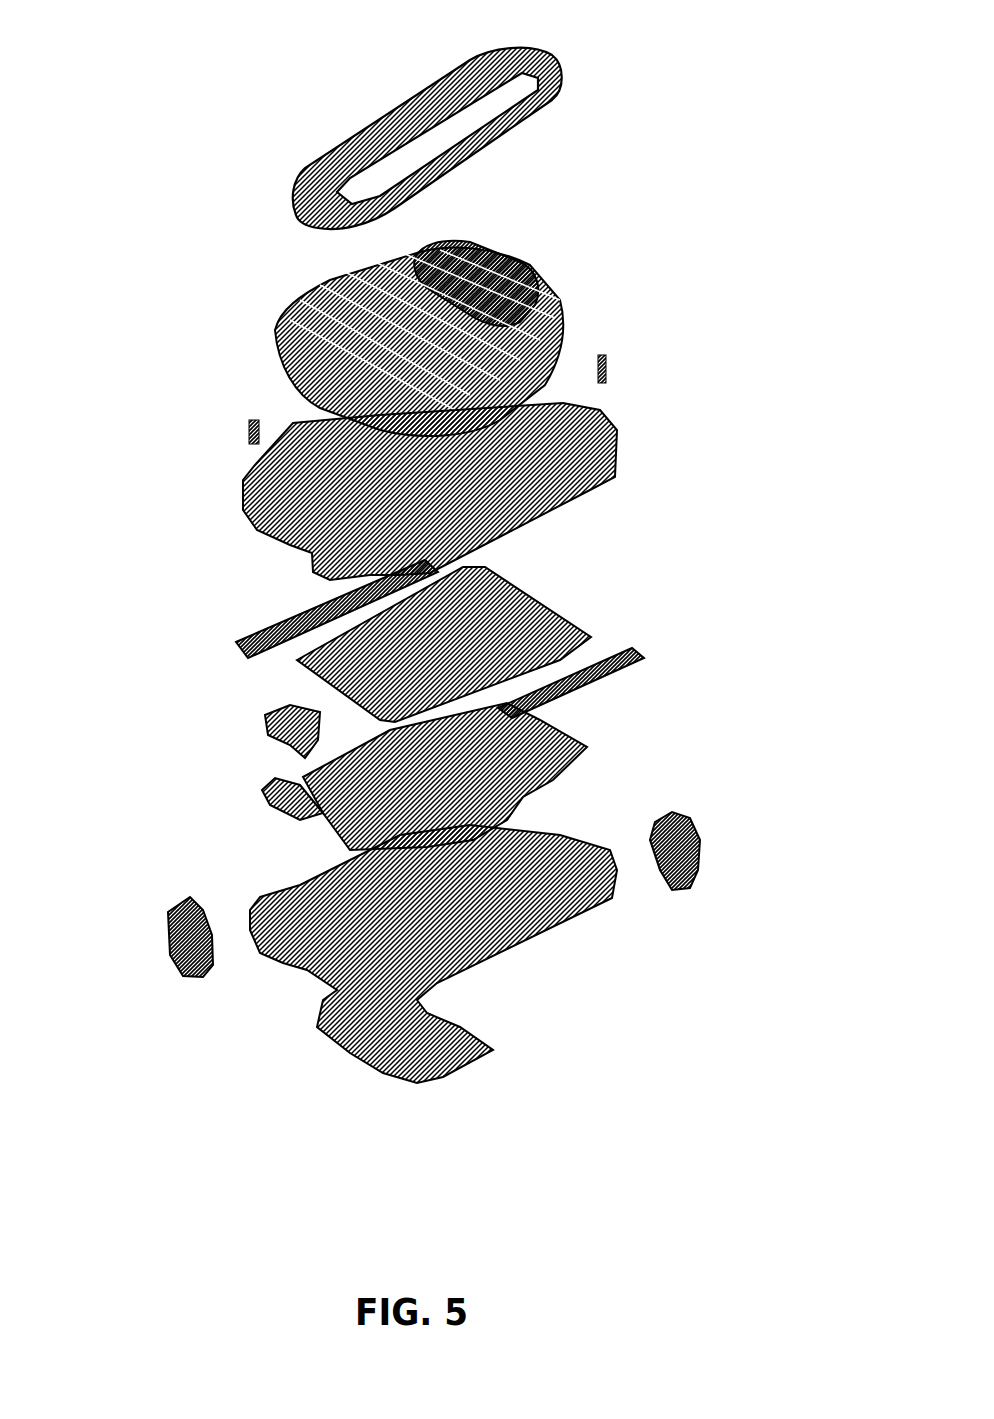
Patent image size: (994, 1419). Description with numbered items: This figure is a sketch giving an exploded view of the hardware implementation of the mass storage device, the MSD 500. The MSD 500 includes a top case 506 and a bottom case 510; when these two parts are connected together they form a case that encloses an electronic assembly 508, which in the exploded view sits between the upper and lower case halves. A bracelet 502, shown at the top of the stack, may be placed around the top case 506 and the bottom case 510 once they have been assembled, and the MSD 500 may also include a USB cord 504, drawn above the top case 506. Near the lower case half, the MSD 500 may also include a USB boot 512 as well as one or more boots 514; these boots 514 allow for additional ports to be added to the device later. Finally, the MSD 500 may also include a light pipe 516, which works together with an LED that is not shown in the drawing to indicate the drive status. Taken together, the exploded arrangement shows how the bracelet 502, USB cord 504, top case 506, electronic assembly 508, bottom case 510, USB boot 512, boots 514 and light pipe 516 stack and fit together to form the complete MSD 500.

The MSD 500 is at (640, 132).
The bracelet 502 is at (292, 198).
The USB cord 504 is at (503, 263).
The top case 506 is at (570, 403).
The electronic assembly 508 is at (537, 600).
The bottom case 510 is at (537, 920).
The USB boot 512 is at (698, 853).
The boots 514 is at (165, 930).
The light pipe 516 is at (292, 735).